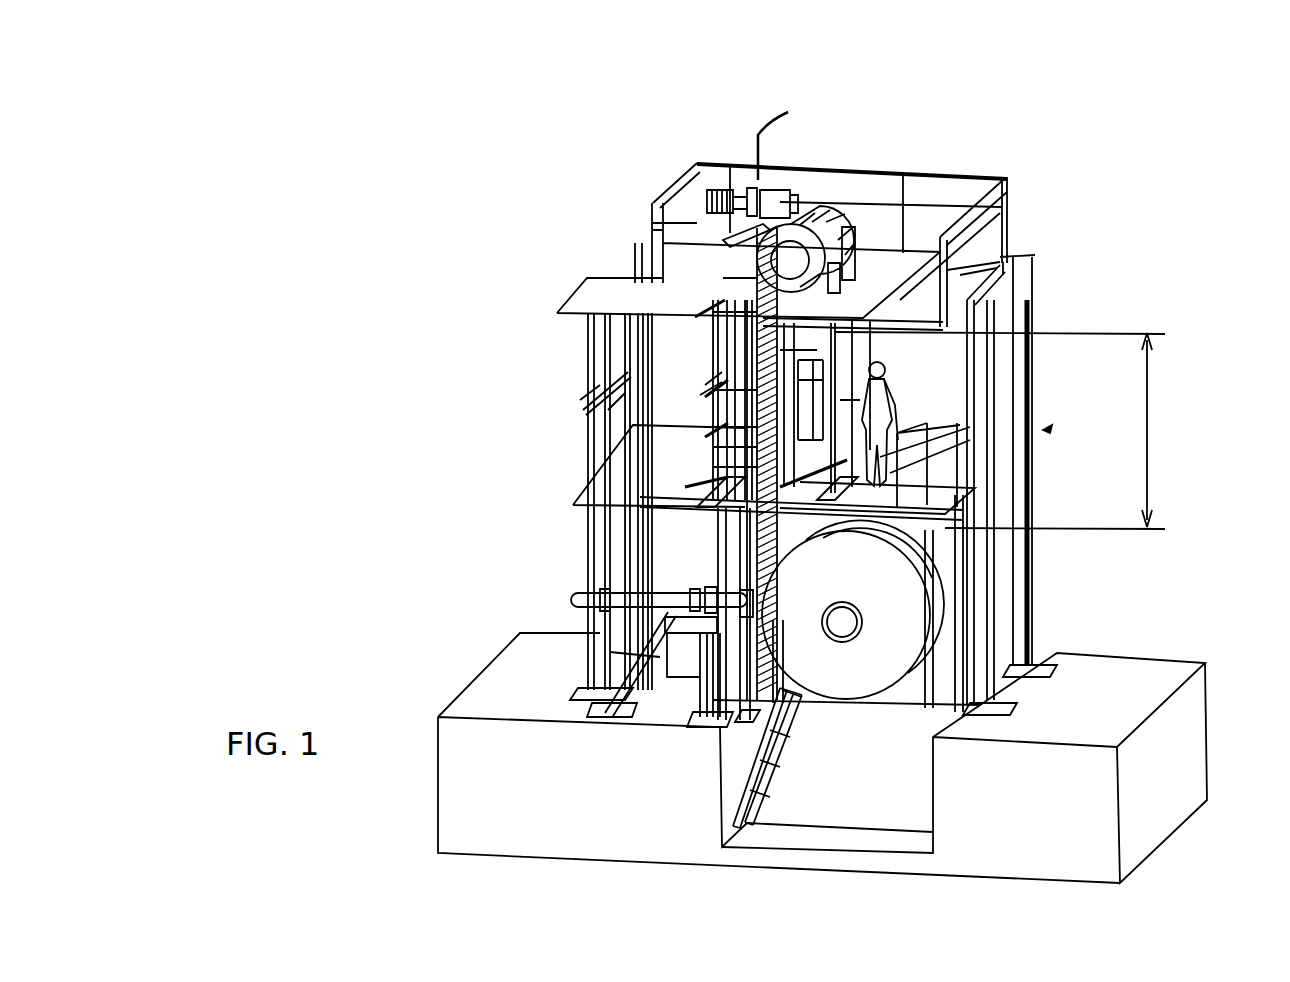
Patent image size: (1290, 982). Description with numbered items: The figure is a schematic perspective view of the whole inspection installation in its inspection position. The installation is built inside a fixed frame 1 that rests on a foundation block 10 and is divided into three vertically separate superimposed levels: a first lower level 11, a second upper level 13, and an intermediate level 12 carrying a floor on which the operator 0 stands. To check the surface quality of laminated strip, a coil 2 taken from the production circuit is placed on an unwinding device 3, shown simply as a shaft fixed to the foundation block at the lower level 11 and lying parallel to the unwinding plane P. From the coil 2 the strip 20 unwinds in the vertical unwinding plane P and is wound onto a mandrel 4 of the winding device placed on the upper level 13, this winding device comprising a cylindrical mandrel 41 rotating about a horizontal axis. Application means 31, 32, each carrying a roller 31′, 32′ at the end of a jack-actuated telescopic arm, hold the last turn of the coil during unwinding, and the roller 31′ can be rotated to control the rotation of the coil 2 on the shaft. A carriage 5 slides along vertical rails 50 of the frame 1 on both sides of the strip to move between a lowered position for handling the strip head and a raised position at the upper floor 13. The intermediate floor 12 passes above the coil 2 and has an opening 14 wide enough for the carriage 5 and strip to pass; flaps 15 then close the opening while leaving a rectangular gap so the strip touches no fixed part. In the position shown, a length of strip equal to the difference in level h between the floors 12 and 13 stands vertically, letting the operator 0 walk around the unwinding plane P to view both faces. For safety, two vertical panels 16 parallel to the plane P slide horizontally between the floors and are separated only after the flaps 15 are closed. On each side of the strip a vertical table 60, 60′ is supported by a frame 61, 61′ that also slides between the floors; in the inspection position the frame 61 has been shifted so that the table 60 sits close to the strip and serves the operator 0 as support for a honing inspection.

The fixed frame 1 is at (1043, 430).
The operator 0 is at (885, 385).
The coil 2 is at (930, 595).
The unwinding device 3 is at (842, 625).
The mandrel 4 is at (845, 200).
The carriage 5 is at (750, 322).
The foundation block 10 is at (1177, 730).
The first lower level 11 is at (500, 692).
The intermediate level 12 is at (700, 490).
The second upper level 13 is at (576, 296).
The opening 14 is at (733, 537).
The flaps 15 is at (733, 513).
The vertical panels 16 is at (723, 425).
The strip 20 is at (1003, 242).
The application means 31 is at (773, 763).
The roller 31′ is at (786, 700).
The application means 32 is at (652, 672).
The roller 32′ is at (712, 700).
The cylindrical mandrel 41 is at (797, 253).
The vertical rails 50 is at (960, 352).
The vertical table 60 is at (710, 397).
The vertical table 60′ is at (915, 325).
The frame 61 is at (708, 452).
The frame 61′ is at (905, 440).
The unwinding plane P is at (773, 146).
The difference in level h is at (1000, 430).